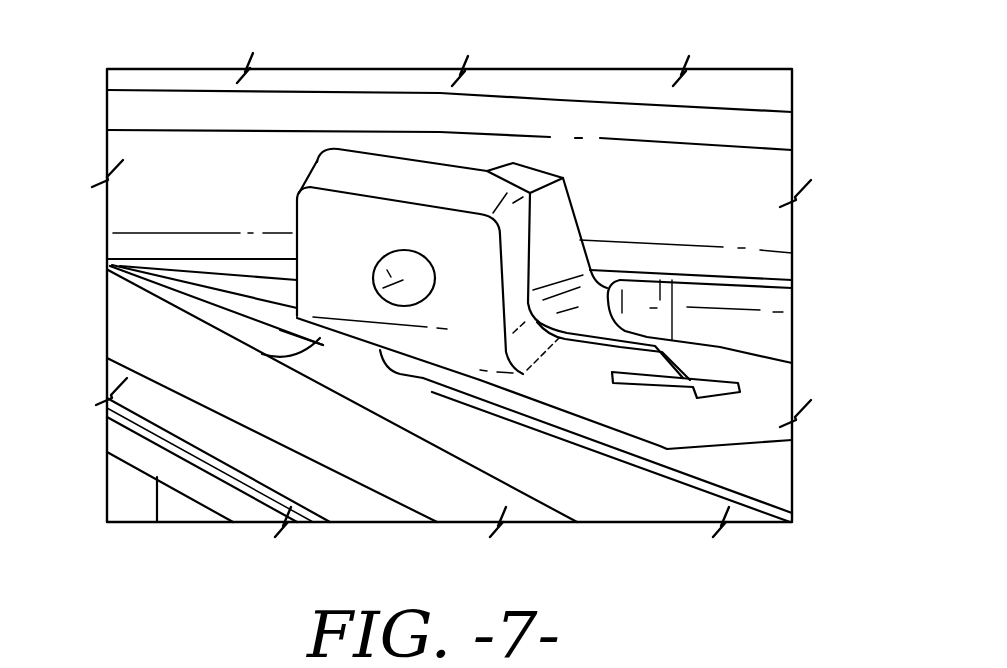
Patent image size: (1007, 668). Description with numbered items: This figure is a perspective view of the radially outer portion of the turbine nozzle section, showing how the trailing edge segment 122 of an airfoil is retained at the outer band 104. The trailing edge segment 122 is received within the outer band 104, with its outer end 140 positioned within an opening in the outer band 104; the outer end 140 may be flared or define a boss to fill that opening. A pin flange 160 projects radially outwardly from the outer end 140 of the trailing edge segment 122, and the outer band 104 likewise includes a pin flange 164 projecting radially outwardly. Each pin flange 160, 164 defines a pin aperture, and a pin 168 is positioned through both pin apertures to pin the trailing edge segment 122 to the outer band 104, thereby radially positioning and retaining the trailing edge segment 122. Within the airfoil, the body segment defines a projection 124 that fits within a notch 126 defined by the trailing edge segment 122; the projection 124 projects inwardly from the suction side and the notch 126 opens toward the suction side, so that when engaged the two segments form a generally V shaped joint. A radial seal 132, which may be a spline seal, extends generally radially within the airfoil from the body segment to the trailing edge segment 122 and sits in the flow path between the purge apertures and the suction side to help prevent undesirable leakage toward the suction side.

The outer band 104 is at (265, 463).
The trailing edge segment 122 is at (643, 410).
The projection 124 is at (723, 372).
The notch 126 is at (723, 401).
The radial seal 132 is at (660, 377).
The outer end 140 is at (107, 270).
The pin flange 160 is at (347, 221).
The pin flange 164 is at (530, 182).
The pin 168 is at (376, 285).